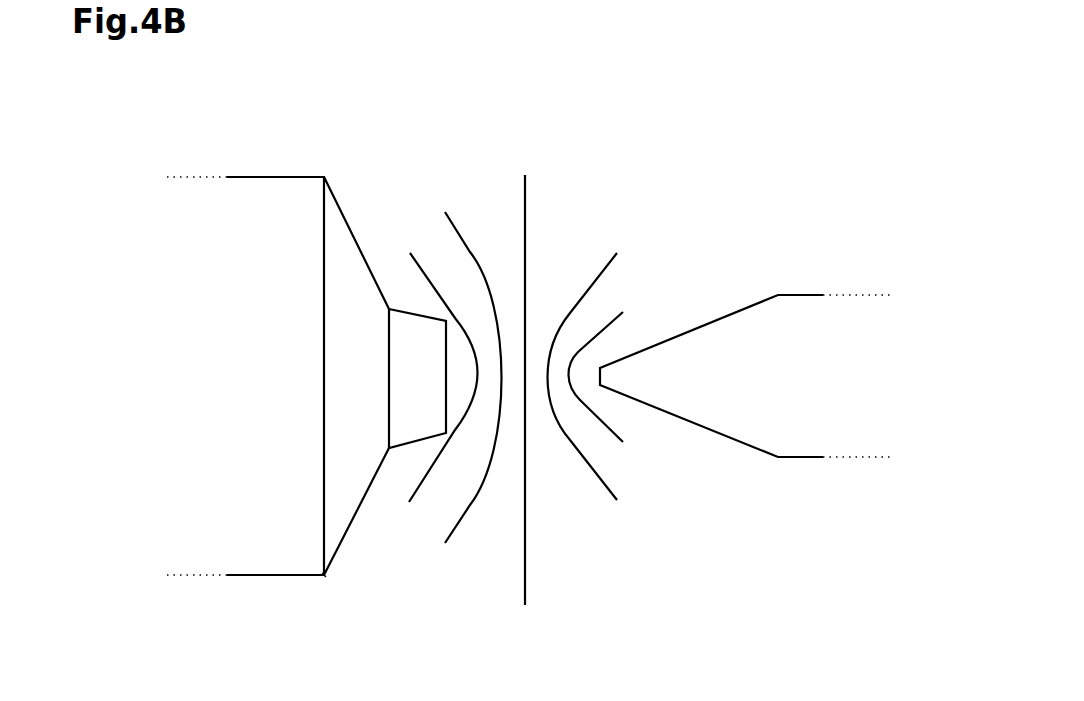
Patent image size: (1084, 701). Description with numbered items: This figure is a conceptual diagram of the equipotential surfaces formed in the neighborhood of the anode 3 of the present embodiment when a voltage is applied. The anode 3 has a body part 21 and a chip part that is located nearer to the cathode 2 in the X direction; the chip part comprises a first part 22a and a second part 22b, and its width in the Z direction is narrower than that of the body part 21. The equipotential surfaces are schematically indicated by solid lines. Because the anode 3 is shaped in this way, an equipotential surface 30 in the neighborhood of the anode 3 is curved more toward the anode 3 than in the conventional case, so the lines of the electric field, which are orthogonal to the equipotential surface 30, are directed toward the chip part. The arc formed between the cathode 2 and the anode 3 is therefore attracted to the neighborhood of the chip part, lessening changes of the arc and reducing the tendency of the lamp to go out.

The body part 21 is at (193, 212).
The first part 22a is at (343, 247).
The second part 22b is at (413, 328).
The equipotential surface 30 is at (423, 487).
The cathode 2 is at (713, 348).
The anode 3 is at (343, 603).